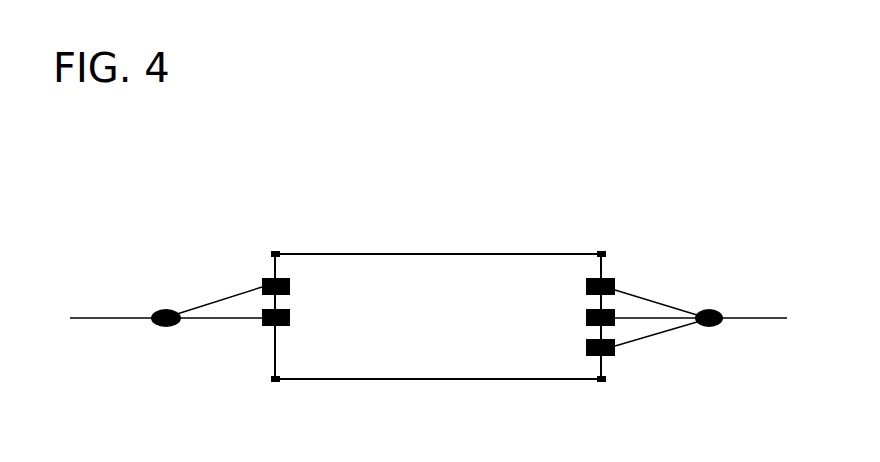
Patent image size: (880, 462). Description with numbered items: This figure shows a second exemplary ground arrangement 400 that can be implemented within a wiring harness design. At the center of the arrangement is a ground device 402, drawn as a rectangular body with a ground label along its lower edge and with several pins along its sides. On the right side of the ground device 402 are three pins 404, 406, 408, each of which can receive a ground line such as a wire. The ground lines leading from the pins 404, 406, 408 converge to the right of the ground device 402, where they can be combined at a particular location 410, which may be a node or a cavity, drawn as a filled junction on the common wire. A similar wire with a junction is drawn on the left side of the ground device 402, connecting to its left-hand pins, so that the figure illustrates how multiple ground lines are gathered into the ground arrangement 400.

The ground arrangement 400 is at (302, 207).
The ground device 402 is at (452, 270).
The pin 404 is at (607, 278).
The pin 406 is at (612, 308).
The pin 408 is at (614, 355).
The location 410 is at (717, 309).